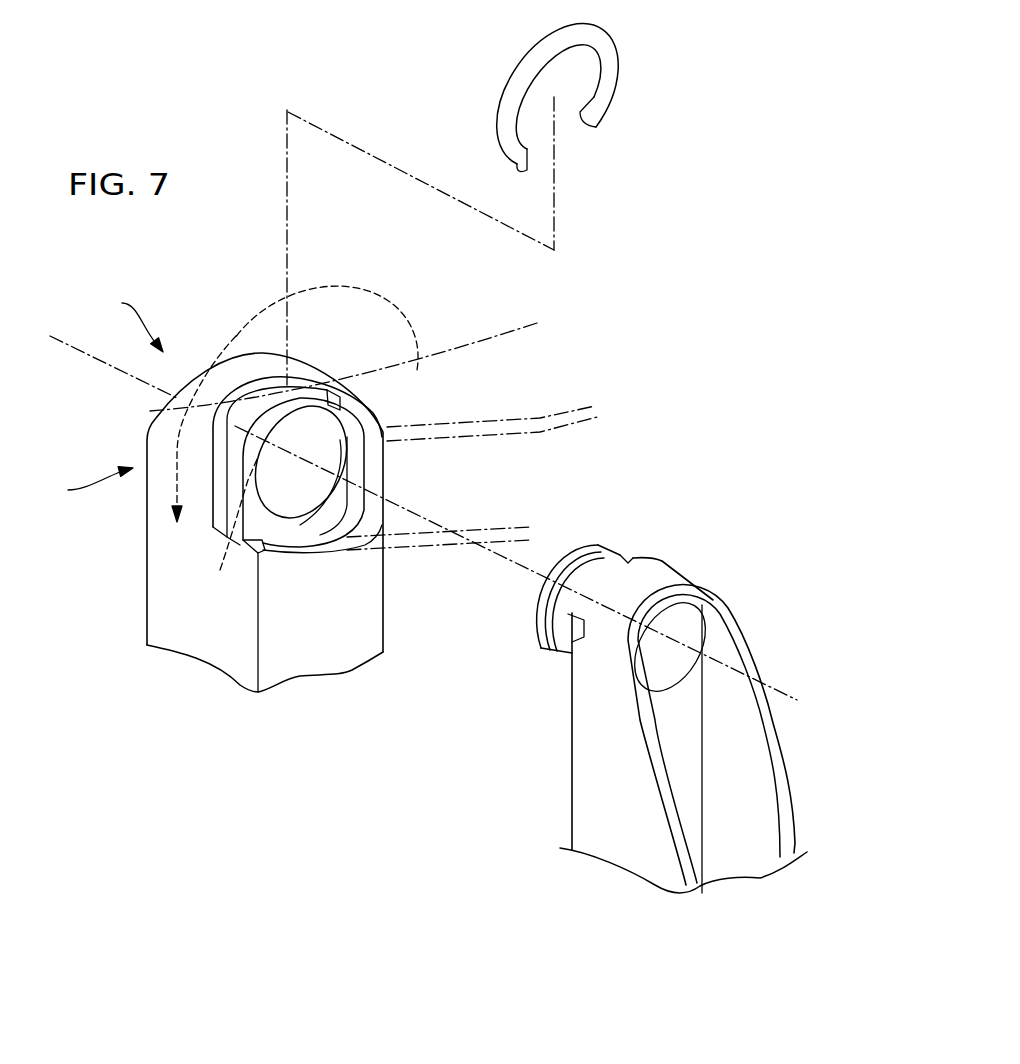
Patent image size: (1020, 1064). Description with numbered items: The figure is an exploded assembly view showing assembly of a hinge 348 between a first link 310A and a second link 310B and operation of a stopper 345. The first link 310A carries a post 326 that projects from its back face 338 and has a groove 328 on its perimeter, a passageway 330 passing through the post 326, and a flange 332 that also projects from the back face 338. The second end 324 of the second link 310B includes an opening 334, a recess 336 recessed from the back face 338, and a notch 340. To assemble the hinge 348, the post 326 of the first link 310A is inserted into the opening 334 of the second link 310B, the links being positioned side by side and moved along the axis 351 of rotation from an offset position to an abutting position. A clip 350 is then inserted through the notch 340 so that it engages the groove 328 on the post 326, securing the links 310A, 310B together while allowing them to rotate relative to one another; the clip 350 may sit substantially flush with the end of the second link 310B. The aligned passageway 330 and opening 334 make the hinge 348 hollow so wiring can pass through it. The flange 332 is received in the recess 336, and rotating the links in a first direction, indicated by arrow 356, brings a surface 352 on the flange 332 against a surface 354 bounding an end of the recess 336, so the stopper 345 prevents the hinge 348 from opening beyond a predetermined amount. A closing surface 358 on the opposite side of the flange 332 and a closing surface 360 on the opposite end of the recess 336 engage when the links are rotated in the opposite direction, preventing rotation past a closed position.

The first link 310A is at (488, 338).
The second link 310B is at (230, 655).
The second end 324 is at (245, 360).
The post 326 is at (563, 647).
The groove 328 is at (603, 545).
The passageway 330 is at (673, 615).
The flange 332 is at (585, 542).
The opening 334 is at (343, 450).
The recess 336 is at (257, 525).
The back face 338 is at (323, 653).
The notch 340 is at (308, 385).
The stopper 345 is at (83, 484).
The hinge 348 is at (124, 323).
The clip 350 is at (531, 58).
The axis of rotation 351 is at (767, 688).
The surface 352 is at (220, 570).
The surface 354 is at (263, 550).
The arrow 356 is at (342, 287).
The closing surface 358 is at (150, 411).
The closing surface 360 is at (346, 401).